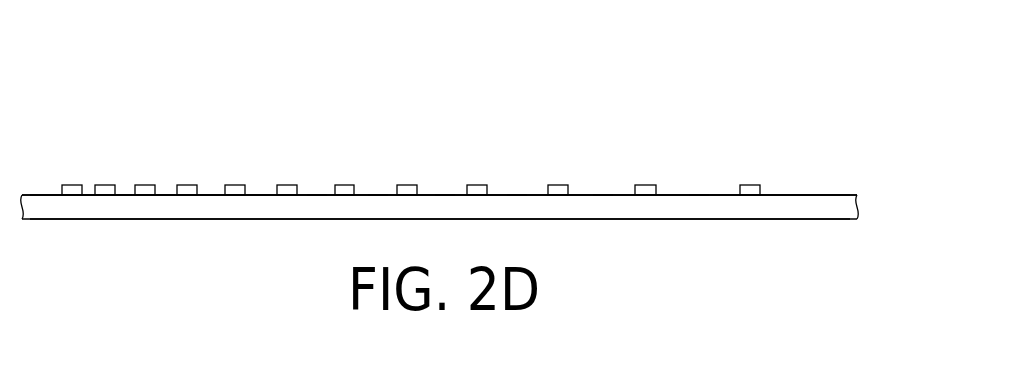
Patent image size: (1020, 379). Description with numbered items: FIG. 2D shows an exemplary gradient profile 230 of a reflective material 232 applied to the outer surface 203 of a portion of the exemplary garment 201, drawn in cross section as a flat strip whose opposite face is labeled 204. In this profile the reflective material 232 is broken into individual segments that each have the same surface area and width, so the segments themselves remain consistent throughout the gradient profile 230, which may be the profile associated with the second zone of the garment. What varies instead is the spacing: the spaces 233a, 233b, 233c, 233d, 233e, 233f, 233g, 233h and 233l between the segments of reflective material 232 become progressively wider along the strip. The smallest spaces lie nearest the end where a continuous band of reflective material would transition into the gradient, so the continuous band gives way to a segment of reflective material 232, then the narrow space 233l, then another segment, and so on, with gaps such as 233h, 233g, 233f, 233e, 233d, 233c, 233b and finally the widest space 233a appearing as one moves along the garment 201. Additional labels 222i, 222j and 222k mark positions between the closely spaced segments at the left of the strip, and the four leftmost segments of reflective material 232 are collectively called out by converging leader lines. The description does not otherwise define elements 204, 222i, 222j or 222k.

The gradient profile 230 is at (134, 54).
The garment 201 is at (846, 207).
The outer surface 203 is at (846, 194).
The bottom surface of substrate 204 is at (787, 220).
The reflective material 232 is at (186, 186).
The electrode 222i is at (210, 173).
The electrode 222j is at (165, 173).
The electrode 222k is at (122, 173).
The space 233a is at (800, 173).
The space 233b is at (699, 173).
The space 233c is at (603, 173).
The space 233d is at (517, 173).
The space 233e is at (445, 173).
The space 233f is at (378, 173).
The space 233g is at (317, 173).
The space 233h is at (260, 173).
The space 233l is at (87, 173).